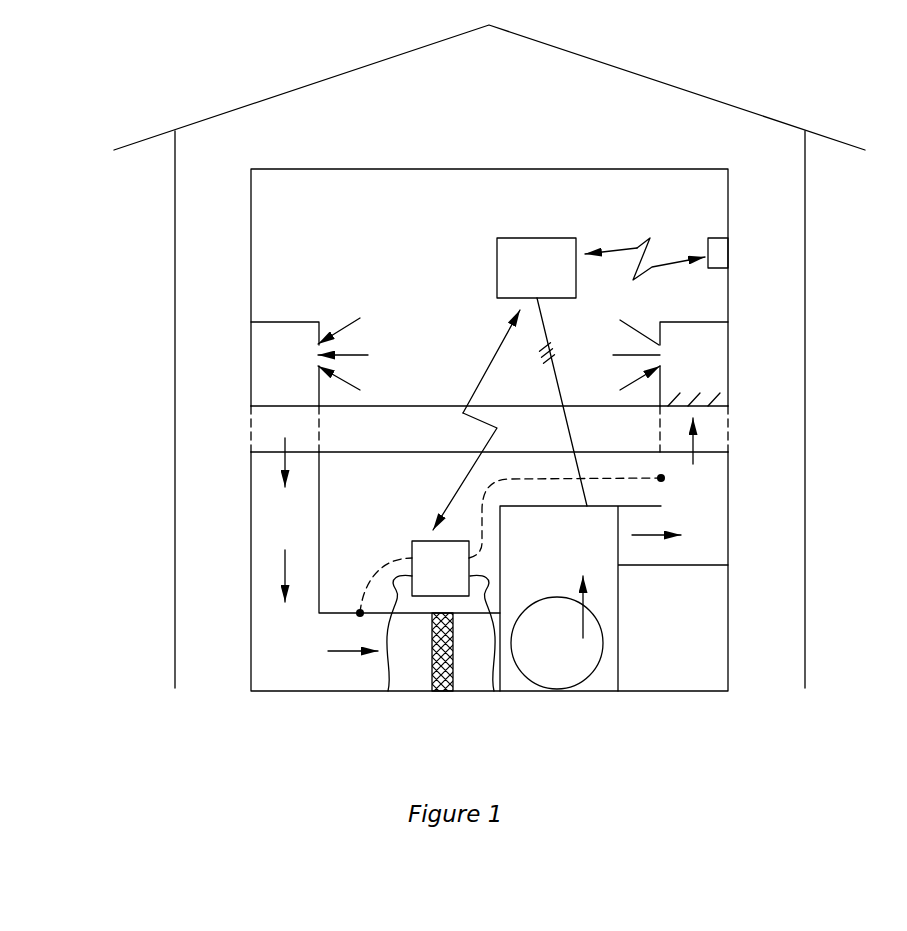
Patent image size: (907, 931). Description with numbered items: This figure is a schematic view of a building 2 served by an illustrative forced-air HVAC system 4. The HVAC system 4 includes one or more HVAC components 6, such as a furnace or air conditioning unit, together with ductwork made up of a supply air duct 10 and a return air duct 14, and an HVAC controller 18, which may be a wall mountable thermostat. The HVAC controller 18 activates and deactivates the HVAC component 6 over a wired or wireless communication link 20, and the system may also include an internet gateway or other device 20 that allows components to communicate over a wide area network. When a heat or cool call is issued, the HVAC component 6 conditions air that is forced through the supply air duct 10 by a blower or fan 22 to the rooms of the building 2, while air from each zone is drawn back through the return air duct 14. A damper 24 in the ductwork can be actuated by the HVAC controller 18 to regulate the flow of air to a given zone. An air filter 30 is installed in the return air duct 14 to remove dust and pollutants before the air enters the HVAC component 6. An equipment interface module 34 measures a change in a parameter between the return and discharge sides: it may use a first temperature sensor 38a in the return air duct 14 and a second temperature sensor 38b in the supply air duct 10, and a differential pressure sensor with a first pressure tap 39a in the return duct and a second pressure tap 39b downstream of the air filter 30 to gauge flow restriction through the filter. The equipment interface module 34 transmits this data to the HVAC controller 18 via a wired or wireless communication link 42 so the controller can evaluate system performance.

The building 2 is at (678, 88).
The HVAC system 4 is at (695, 652).
The HVAC component 6 is at (618, 630).
The supply air duct 10 is at (695, 522).
The return air duct 14 is at (277, 525).
The HVAC controller 18 is at (537, 238).
The wired or wireless communication link 20 is at (720, 253).
The blower or fan 22 is at (587, 673).
The damper 24 is at (725, 399).
The air filter 30 is at (440, 691).
The equipment interface module 34 is at (423, 541).
The first temperature sensor 38a is at (360, 613).
The second temperature sensor 38b is at (661, 478).
The first pressure tap 39a is at (388, 691).
The second pressure tap 39b is at (494, 691).
The wired or wireless communication link 42 is at (493, 357).